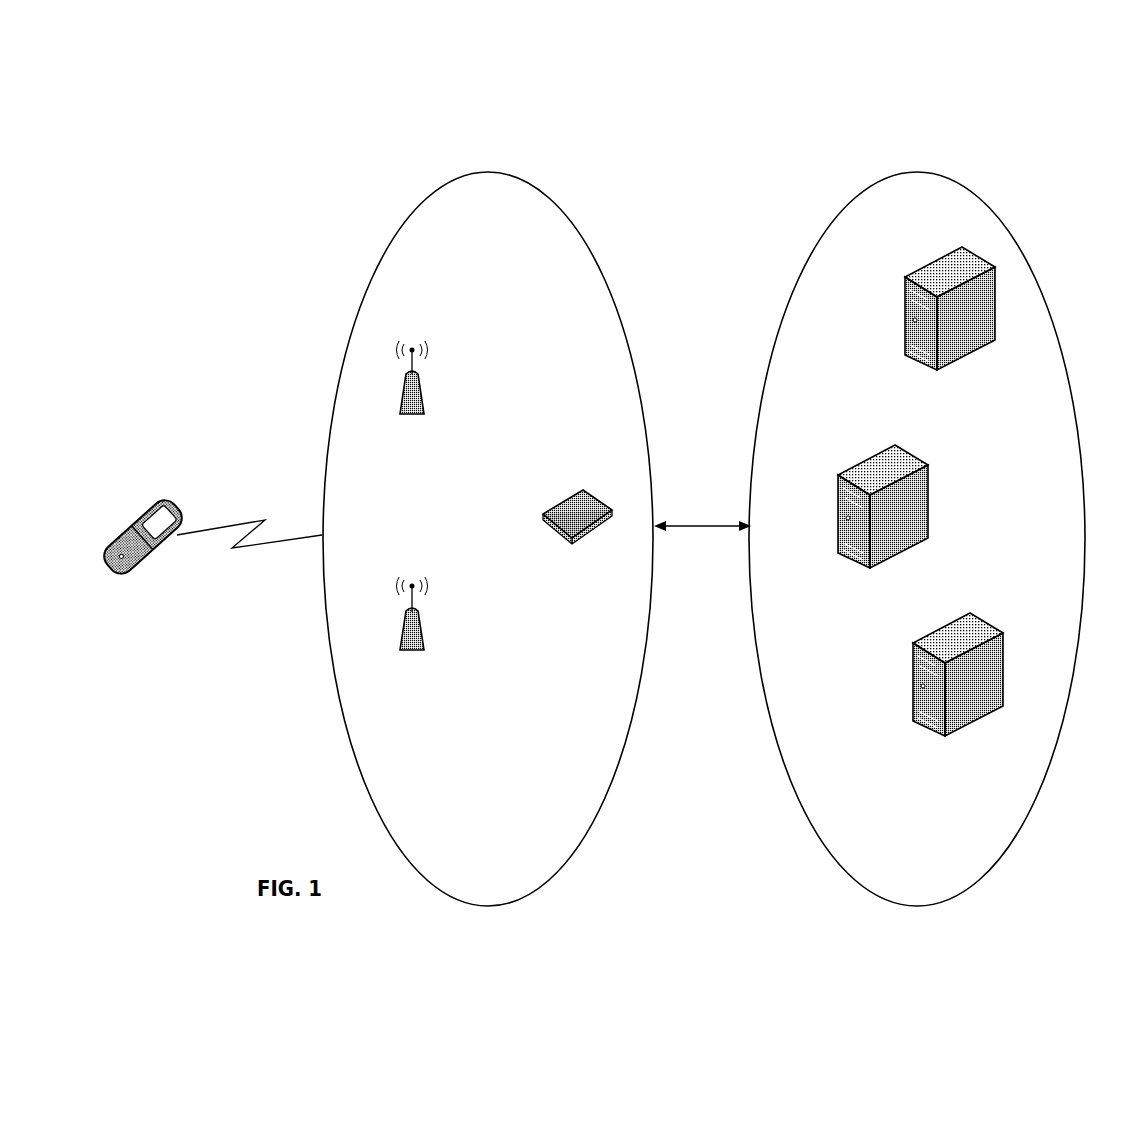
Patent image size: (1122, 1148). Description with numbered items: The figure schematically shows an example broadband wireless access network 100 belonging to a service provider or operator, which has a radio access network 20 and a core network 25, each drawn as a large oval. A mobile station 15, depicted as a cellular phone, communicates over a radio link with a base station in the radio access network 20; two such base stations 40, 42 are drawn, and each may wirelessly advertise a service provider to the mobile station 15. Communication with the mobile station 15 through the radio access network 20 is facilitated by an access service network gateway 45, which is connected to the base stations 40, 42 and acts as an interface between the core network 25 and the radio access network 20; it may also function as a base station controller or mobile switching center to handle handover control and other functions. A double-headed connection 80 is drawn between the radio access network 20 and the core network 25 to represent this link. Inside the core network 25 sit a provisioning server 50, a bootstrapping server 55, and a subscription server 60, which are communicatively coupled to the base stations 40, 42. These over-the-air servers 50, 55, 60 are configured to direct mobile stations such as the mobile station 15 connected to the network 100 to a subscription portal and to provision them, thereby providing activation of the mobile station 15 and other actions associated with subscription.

The broadband wireless access (BWA) network 100 is at (706, 134).
The mobile station (MS) 15 is at (168, 497).
The radio access network (RAN) 20 is at (586, 850).
The core network 25 is at (1000, 869).
The base station (BS) 40 is at (434, 372).
The base station (BS) 42 is at (440, 628).
The access service network gateway (ASN-GW) 45 is at (576, 478).
The provisioning server 50 is at (926, 246).
The bootstrapping server 55 is at (936, 478).
The subscription server 60 is at (1004, 622).
The link between radio access network and core network 80 is at (691, 534).